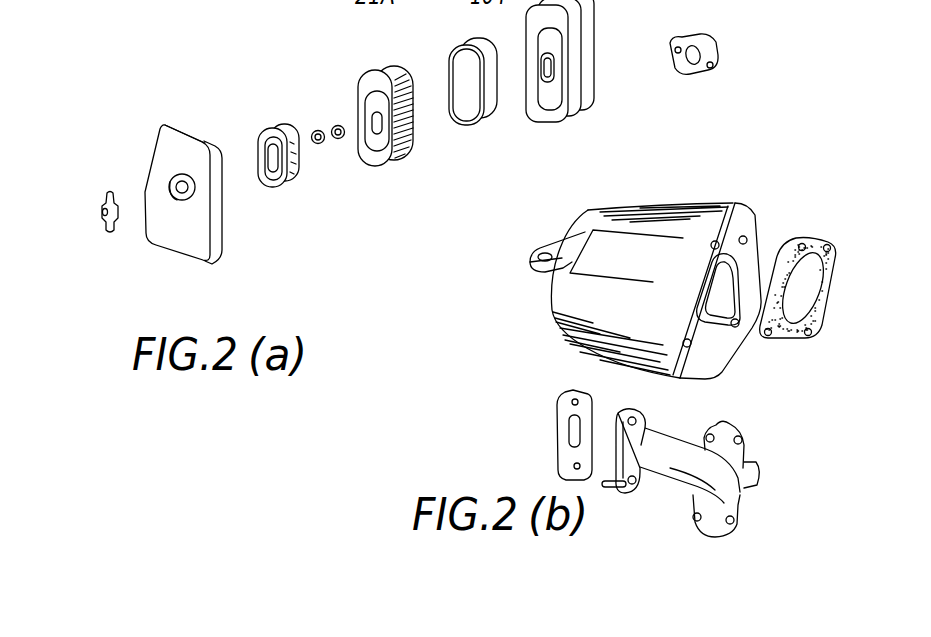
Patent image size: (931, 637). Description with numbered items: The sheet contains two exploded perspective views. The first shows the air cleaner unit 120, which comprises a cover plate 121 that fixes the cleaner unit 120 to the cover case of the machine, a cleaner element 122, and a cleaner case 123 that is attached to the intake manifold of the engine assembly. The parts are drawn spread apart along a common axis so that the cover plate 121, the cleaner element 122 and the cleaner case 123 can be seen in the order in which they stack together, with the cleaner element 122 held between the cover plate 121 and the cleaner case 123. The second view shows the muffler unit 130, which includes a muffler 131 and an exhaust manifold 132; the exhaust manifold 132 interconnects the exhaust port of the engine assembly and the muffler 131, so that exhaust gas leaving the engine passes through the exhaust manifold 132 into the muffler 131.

In FIG. 2A, the cleaner unit 120 is at (306, 117).
In FIG. 2A, the cover plate 121 is at (203, 250).
In FIG. 2A, the cleaner element 122 is at (502, 150).
In FIG. 2A, the cleaner case 123 is at (727, 72).
In FIG. 2B, the muffler unit 130 is at (762, 477).
In FIG. 2B, the muffler 131 is at (722, 340).
In FIG. 2B, the exhaust manifold 132 is at (690, 472).